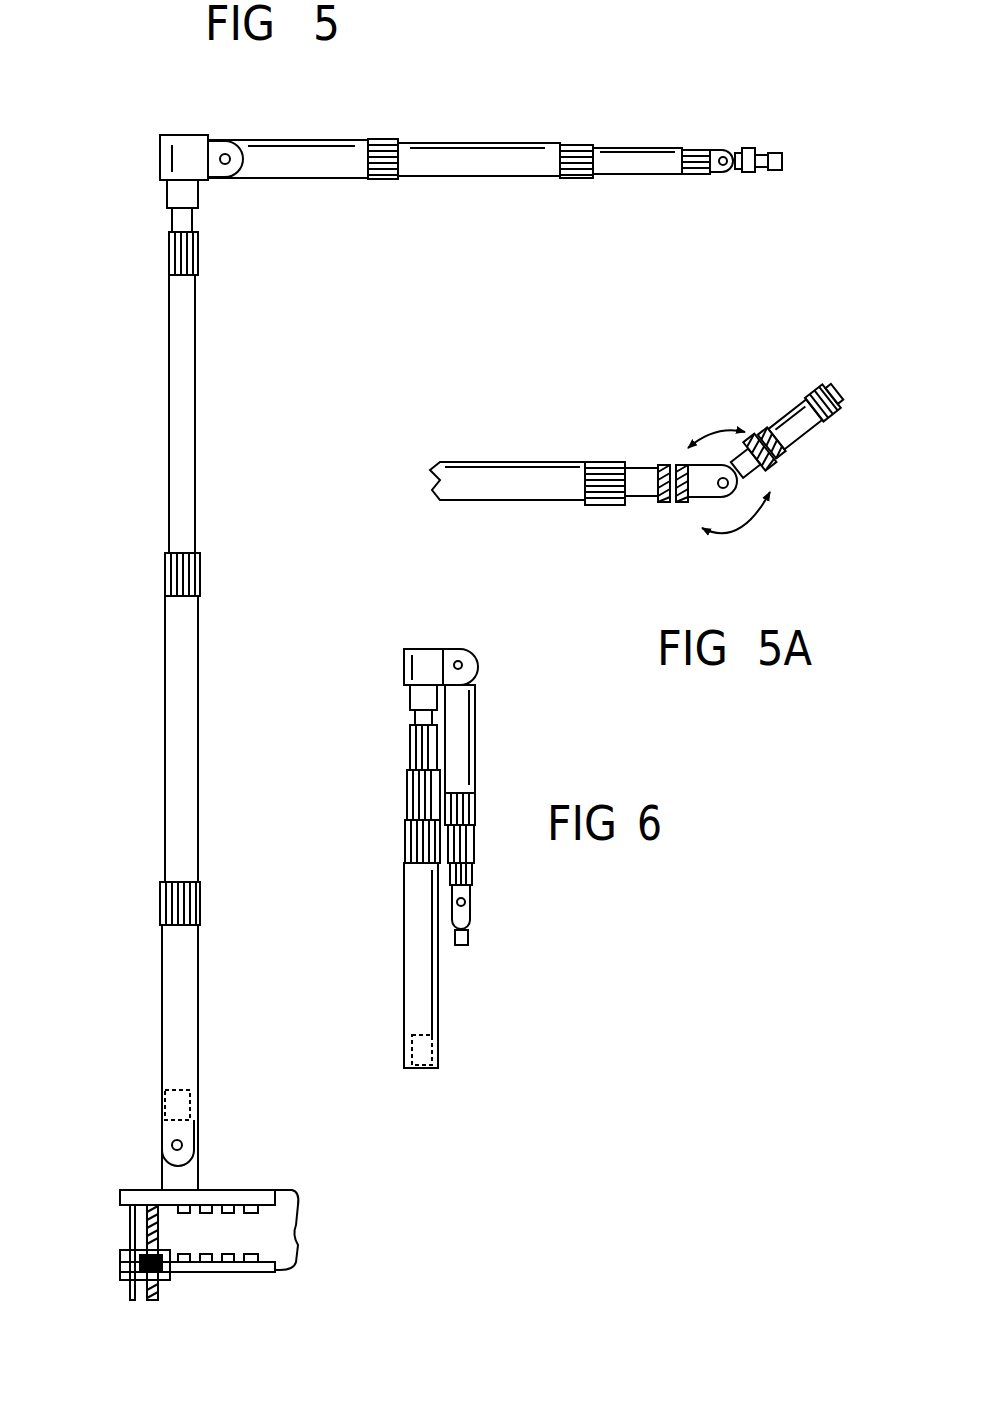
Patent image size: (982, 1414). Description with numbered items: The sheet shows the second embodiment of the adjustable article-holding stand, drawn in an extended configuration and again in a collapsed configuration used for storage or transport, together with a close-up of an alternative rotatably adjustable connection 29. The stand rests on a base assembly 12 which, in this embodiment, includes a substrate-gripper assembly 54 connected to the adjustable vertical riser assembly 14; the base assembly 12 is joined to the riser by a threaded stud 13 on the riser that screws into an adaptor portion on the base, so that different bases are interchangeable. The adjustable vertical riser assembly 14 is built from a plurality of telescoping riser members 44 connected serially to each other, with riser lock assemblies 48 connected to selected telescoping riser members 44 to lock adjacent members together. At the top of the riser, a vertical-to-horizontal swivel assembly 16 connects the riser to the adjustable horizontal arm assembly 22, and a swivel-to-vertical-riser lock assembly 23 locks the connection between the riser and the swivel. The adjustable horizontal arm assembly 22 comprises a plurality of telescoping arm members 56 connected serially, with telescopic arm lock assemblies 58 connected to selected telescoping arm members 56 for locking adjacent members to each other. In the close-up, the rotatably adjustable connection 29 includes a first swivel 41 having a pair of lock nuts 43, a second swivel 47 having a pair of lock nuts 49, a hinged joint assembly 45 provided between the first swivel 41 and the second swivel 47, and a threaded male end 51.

In FIG. 5, the base assembly 12 is at (160, 1168).
In FIG. 5, the threaded stud 13 is at (170, 1100).
In FIG. 5, the adjustable vertical riser assembly 14 is at (174, 685).
In FIG. 5, the vertical-to-horizontal swivel assembly 16 is at (152, 147).
In FIG. 6, the vertical-to-horizontal swivel assembly 16 is at (415, 648).
In FIG. 5, the adjustable horizontal arm assembly 22 is at (521, 162).
In FIG. 5, the swivel-to-vertical-riser lock assembly 23 is at (172, 255).
In FIG. 6, the swivel-to-vertical-riser lock assembly 23 is at (415, 748).
In FIG. 5, the rotatably adjustable connection 29 is at (778, 182).
In FIG. 5A, the rotatably adjustable connection 29 is at (802, 400).
In FIG. 6, the rotatably adjustable connection 29 is at (476, 940).
In FIG. 5A, the first swivel 41 is at (655, 500).
In FIG. 5A, the lock nuts 43 is at (682, 462).
In FIG. 5, the telescoping riser members 44 is at (190, 500).
In FIG. 6, the telescoping riser members 44 is at (410, 975).
In FIG. 5A, the hinged joint assembly 45 is at (735, 505).
In FIG. 5A, the second swivel 47 is at (752, 430).
In FIG. 5A, the lock nuts 49 is at (772, 455).
In FIG. 5, the riser lock assemblies 48 is at (172, 578).
In FIG. 6, the riser lock assemblies 48 is at (412, 800).
In FIG. 5A, the threaded male end 51 is at (826, 405).
In FIG. 5, the substrate-gripper assembly 54 is at (295, 1232).
In FIG. 5, the telescoping arm members 56 is at (306, 165).
In FIG. 5A, the telescoping arm members 56 is at (645, 490).
In FIG. 6, the telescoping arm members 56 is at (468, 752).
In FIG. 5, the telescopic arm lock assemblies 58 is at (383, 180).
In FIG. 5A, the telescopic arm lock assemblies 58 is at (600, 460).
In FIG. 6, the telescopic arm lock assemblies 58 is at (470, 808).